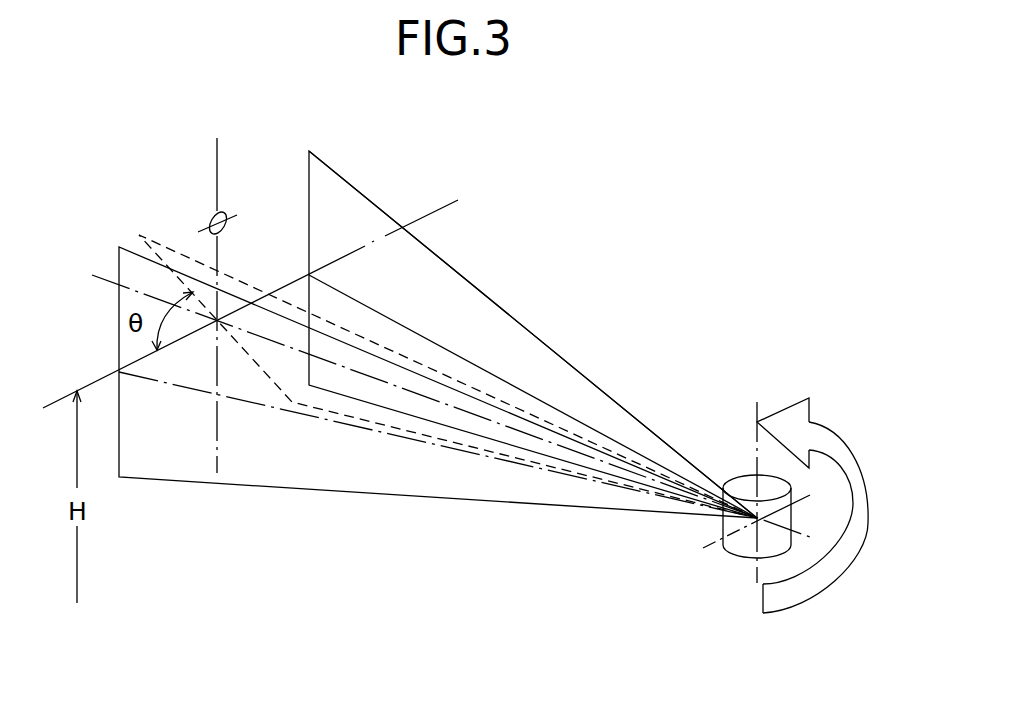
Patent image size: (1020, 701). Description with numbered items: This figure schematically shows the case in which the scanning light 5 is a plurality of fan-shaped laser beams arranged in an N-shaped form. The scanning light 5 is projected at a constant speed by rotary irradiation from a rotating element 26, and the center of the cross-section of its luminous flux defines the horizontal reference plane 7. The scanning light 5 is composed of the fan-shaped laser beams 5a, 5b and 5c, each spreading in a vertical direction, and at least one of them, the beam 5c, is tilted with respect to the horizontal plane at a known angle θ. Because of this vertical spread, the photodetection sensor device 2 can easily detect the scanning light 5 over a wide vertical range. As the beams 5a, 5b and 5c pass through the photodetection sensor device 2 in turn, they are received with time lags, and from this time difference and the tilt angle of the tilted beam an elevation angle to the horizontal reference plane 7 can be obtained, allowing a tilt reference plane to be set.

The photodetection sensor device 2 is at (209, 221).
The scanning light 5 is at (462, 273).
The fan-shaped laser beam 5a is at (265, 458).
The fan-shaped laser beam 5b is at (340, 215).
The fan-shaped laser beam 5c is at (173, 252).
The horizontal reference plane 7 is at (443, 207).
The rotating mirror 26 is at (745, 473).